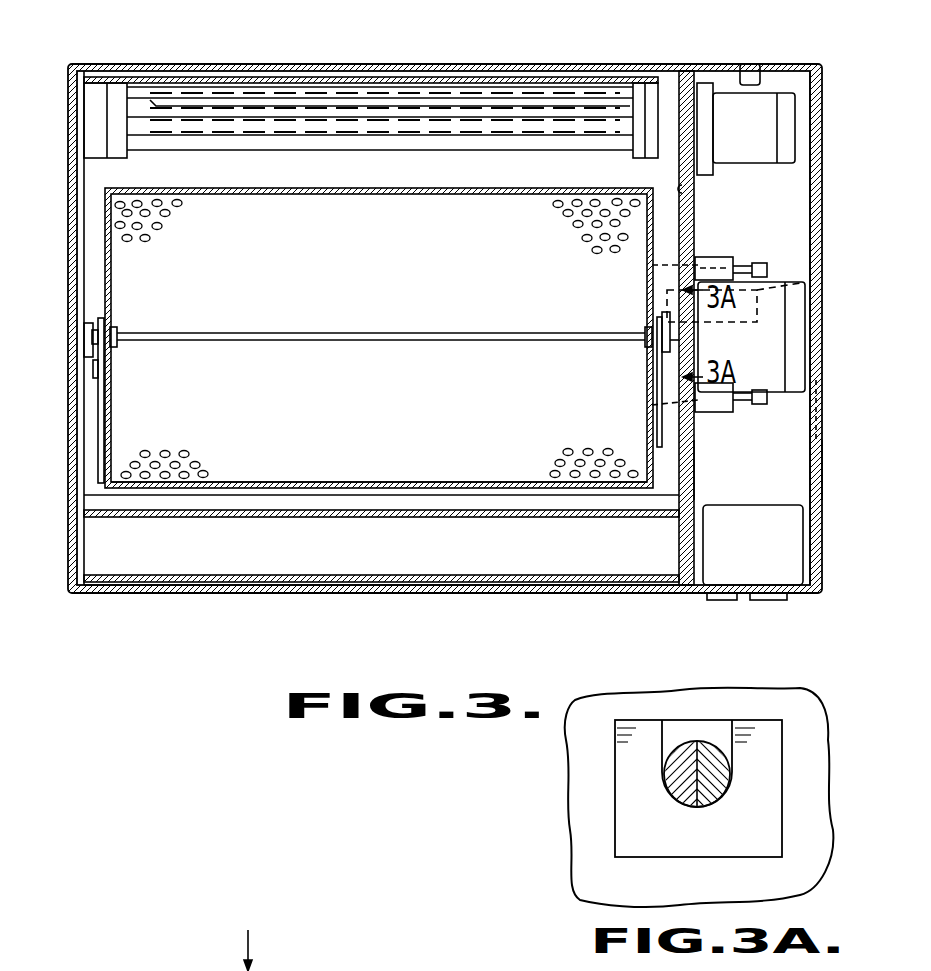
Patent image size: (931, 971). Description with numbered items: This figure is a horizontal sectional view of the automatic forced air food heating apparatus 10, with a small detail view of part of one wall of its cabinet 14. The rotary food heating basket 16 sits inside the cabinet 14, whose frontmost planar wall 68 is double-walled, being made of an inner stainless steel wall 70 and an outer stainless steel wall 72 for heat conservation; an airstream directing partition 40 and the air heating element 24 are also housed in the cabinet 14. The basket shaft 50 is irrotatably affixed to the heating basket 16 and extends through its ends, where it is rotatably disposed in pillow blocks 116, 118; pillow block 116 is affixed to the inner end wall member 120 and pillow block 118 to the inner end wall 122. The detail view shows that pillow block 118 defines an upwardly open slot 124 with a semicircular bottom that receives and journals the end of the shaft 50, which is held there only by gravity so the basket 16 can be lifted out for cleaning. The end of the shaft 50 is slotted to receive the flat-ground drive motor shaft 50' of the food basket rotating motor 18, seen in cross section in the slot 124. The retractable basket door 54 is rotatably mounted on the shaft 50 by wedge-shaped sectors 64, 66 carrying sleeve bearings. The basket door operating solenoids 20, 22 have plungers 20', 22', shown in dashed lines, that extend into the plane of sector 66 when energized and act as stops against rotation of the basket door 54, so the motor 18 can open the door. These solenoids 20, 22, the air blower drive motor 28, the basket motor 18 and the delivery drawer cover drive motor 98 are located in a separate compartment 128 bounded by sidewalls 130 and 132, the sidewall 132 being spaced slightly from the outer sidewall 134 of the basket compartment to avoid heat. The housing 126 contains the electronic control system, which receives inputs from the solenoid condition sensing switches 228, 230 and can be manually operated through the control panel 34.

In FIG. 3, the automatic forced air food heating apparatus 10 is at (609, 608).
In FIG. 3, the cabinet 14 is at (618, 58).
In FIG. 3, the rotary food heating basket 16 is at (250, 190).
In FIG. 3, the food basket rotating motor 18 is at (800, 318).
In FIG. 3, the basket door operating solenoid 20 is at (725, 419).
In FIG. 3, the solenoid plunger 20' is at (639, 401).
In FIG. 3, the basket door operating solenoid 22 is at (724, 246).
In FIG. 3, the solenoid plunger 22' is at (637, 272).
In FIG. 3, the air heating element 24 is at (299, 64).
In FIG. 3, the air blower drive motor 28 is at (787, 117).
In FIG. 3, the manually operable control panel 34 is at (798, 602).
In FIG. 3, the airstream directing partition 40 is at (298, 513).
In FIG. 3, the basket shaft 50 is at (381, 317).
In FIG. 3A, the basket shaft 50 is at (700, 817).
In FIG. 3A, the drive motor shaft 50' is at (703, 746).
In FIG. 3, the retractable basket door 54 is at (280, 482).
In FIG. 3, the wedge-shaped sector 64 is at (98, 410).
In FIG. 3, the wedge-shaped sector 66 is at (655, 444).
In FIG. 3, the frontmost planar wall 68 is at (243, 600).
In FIG. 3, the inner stainless steel wall 70 is at (350, 578).
In FIG. 3, the outer stainless steel wall 72 is at (357, 593).
In FIG. 3, the delivery drawer cover drive motor 98 is at (815, 278).
In FIG. 3, the pillow block 116 is at (92, 325).
In FIG. 3, the pillow block 118 is at (662, 312).
In FIG. 3A, the pillow block 118 is at (770, 720).
In FIG. 3, the inner end wall member 120 is at (84, 237).
In FIG. 3, the inner end wall 122 is at (683, 188).
In FIG. 3A, the inner end wall 122 is at (806, 862).
In FIG. 3A, the upwardly open slot 124 is at (666, 722).
In FIG. 3, the housing 126 is at (770, 559).
In FIG. 3, the compartment 128 is at (820, 433).
In FIG. 3, the sidewall 130 is at (698, 462).
In FIG. 3, the sidewall 132 is at (820, 483).
In FIG. 3, the outer sidewall 134 is at (688, 70).
In FIG. 3, the basket door operating solenoid condition sensing switch 228 is at (758, 403).
In FIG. 3, the basket door operating solenoid condition sensing switch 230 is at (764, 265).